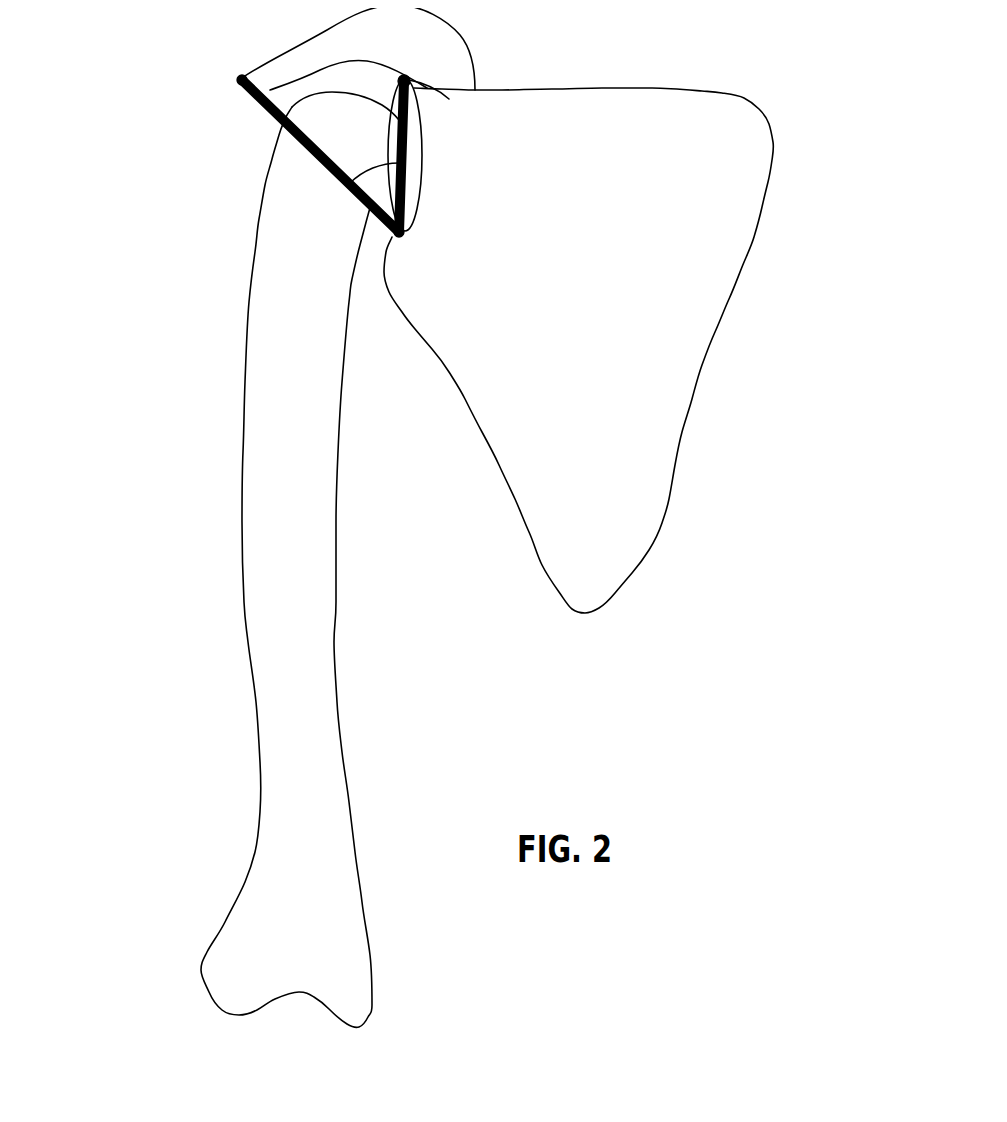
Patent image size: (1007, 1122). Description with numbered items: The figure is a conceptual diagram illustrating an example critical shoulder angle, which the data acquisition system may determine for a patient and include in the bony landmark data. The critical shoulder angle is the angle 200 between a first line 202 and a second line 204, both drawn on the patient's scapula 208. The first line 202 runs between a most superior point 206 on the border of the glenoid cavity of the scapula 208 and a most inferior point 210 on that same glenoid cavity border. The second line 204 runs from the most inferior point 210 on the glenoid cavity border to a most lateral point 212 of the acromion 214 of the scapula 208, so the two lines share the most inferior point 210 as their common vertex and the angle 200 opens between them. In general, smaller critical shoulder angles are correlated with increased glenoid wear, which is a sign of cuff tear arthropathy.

The angle 200 is at (360, 158).
The first line 202 is at (413, 195).
The second line 204 is at (307, 165).
The most superior point 206 is at (410, 88).
The scapula 208 is at (760, 92).
The most inferior point 210 is at (408, 238).
The most lateral point 212 is at (227, 85).
The acromion 214 is at (457, 19).